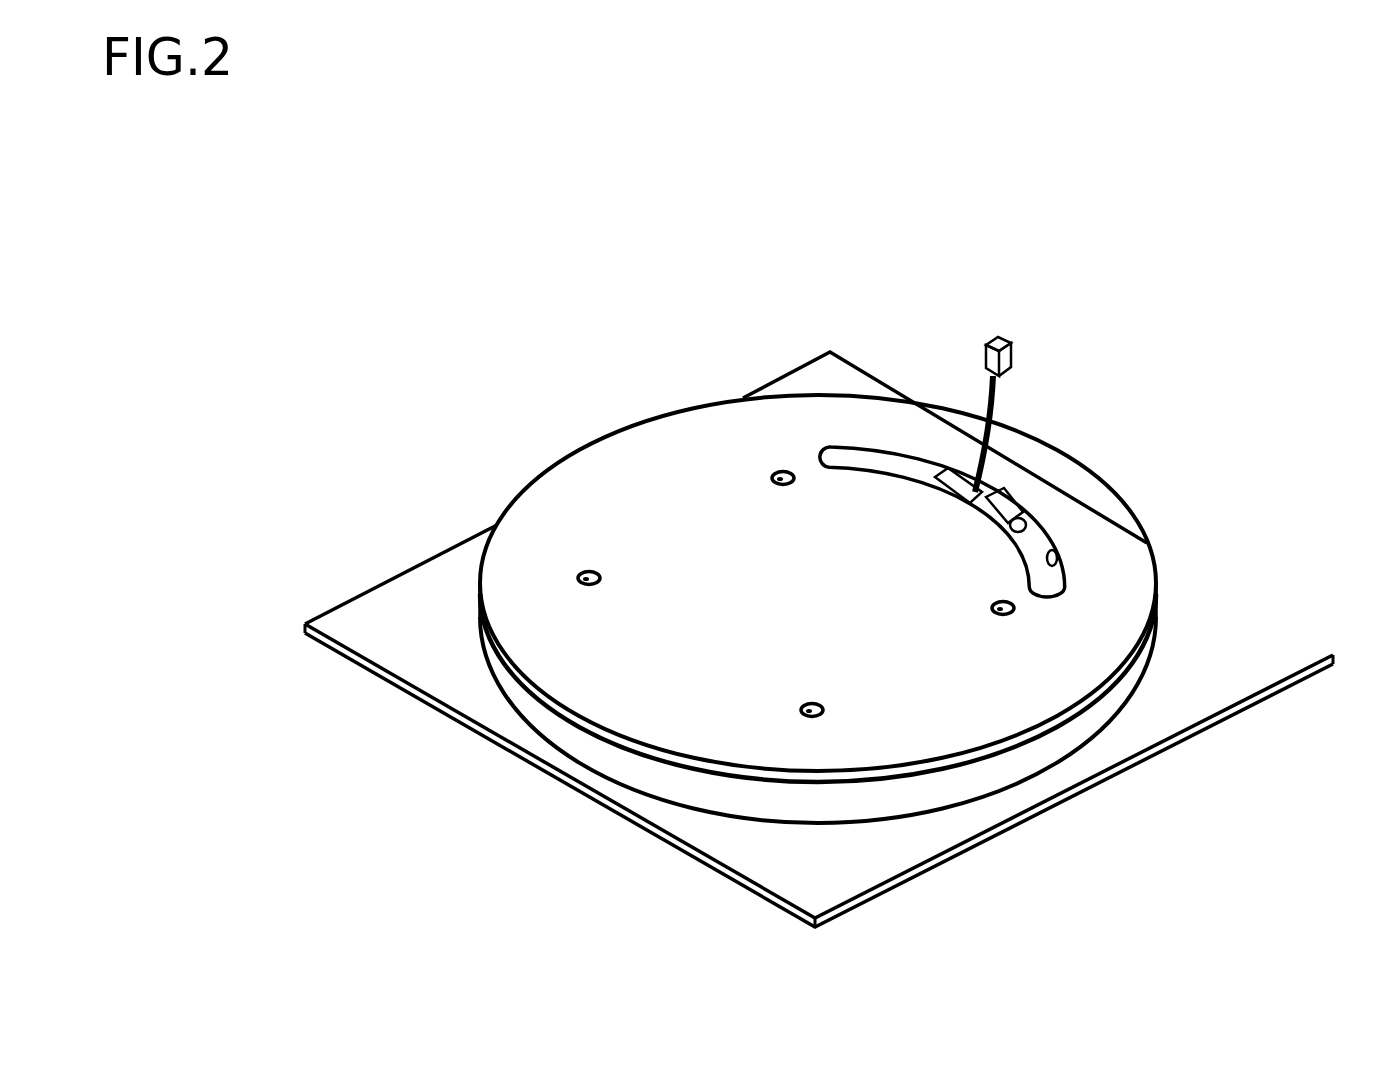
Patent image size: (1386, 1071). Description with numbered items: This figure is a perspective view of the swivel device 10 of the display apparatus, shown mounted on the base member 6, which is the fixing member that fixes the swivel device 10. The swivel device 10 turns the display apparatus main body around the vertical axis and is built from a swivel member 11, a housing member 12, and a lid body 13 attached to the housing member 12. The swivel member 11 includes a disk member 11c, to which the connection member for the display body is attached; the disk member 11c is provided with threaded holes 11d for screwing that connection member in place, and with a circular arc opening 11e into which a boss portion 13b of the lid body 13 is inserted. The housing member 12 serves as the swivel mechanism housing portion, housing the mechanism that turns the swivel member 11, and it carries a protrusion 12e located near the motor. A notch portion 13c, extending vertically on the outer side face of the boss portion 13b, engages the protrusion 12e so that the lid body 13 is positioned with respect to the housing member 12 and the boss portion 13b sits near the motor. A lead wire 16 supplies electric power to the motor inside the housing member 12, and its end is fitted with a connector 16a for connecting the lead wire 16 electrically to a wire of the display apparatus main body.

The base member 6 is at (1323, 668).
The swivel device 10 is at (637, 385).
The swivel member 11 is at (598, 473).
The disk member 11c is at (818, 583).
The threaded holes 11d is at (785, 492).
The circular arc opening 11e is at (1073, 560).
The housing member 12 is at (713, 790).
The protrusion 12e is at (1000, 478).
The lid body 13 is at (872, 452).
The boss portion 13b is at (1033, 503).
The notch portion 13c is at (977, 513).
The lead wire 16 is at (998, 402).
The connector 16a is at (1012, 326).